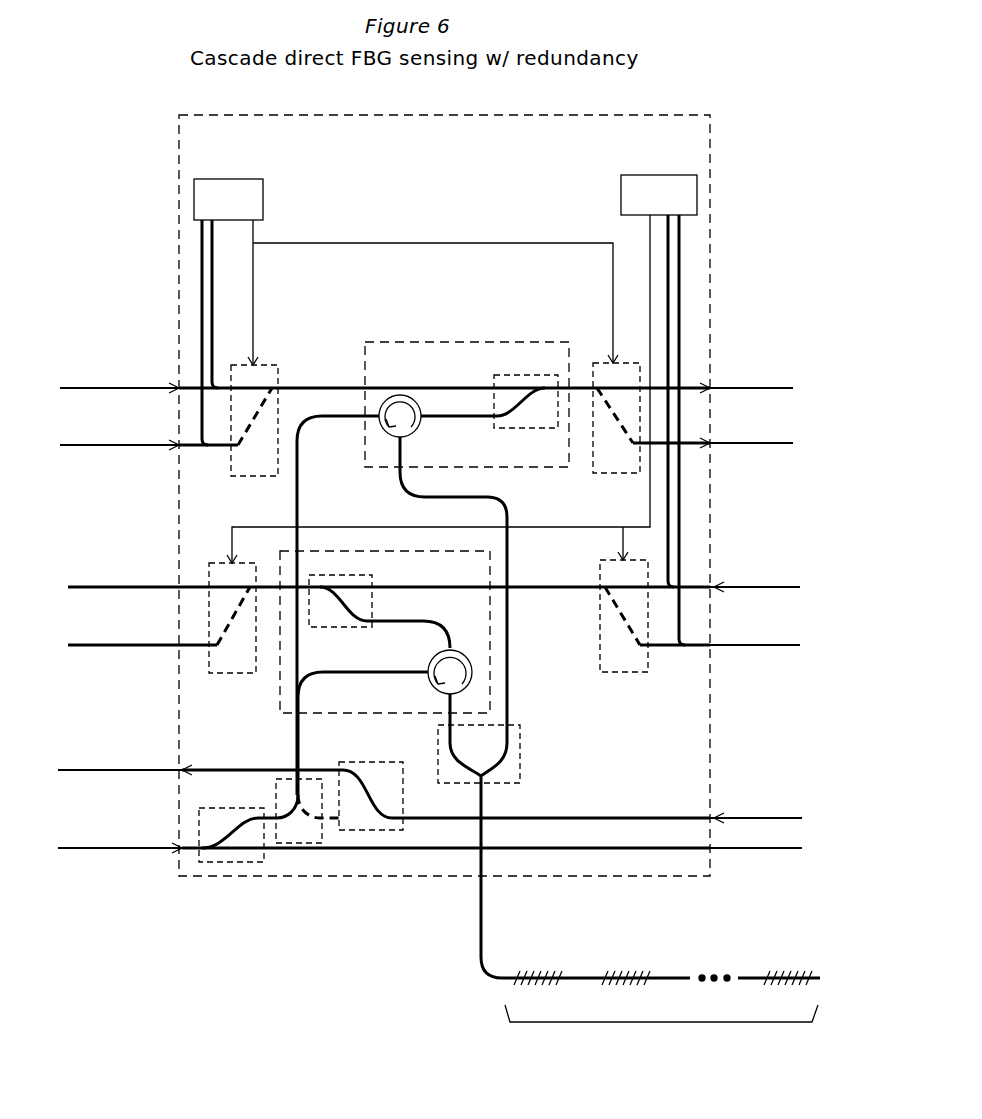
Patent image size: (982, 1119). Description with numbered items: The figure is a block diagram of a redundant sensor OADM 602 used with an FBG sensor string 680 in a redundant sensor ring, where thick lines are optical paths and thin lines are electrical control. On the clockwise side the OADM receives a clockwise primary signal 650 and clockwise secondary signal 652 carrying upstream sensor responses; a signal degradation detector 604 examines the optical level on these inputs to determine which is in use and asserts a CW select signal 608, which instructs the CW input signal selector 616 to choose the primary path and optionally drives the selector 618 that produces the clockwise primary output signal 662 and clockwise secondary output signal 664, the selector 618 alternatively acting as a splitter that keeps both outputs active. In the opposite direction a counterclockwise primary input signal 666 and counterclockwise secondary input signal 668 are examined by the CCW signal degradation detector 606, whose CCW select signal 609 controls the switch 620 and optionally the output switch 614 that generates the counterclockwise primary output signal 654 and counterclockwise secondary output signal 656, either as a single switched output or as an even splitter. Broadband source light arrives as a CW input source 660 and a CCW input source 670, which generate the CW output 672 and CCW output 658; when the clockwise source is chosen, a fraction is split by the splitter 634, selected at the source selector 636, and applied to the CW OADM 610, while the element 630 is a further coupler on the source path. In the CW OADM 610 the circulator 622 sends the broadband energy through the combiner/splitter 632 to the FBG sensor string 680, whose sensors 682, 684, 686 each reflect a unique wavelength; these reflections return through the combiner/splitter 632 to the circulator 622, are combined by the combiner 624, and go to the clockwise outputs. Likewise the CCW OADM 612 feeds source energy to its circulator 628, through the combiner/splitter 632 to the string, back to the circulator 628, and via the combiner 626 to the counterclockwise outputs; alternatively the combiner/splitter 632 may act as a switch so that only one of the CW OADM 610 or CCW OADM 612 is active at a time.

The redundant sensor OADM 602 is at (426, 482).
The signal degradation detector 604 is at (289, 286).
The CCW signal degradation detector 606 is at (587, 385).
The CW select signal 608 is at (433, 292).
The CCW select signal 609 is at (438, 389).
The CW OADM 610 is at (467, 390).
The CCW OADM 612 is at (363, 640).
The output switch 614 is at (225, 632).
The CW input signal selector 616 is at (253, 433).
The selector 618 is at (647, 434).
The switch 620 is at (651, 631).
The circulator 622 is at (402, 595).
The combiner 624 is at (489, 388).
The combiner 626 is at (379, 615).
The circulator 628 is at (385, 722).
The CCW source coupler 630 is at (524, 782).
The combiner/splitter 632 is at (564, 851).
The splitter 634 is at (231, 821).
The source selector 636 is at (299, 812).
The clockwise primary signal 650 is at (383, 355).
The clockwise secondary signal 652 is at (145, 440).
The counterclockwise primary output signal 654 is at (379, 556).
The counterclockwise secondary output signal 656 is at (132, 637).
The CCW output 658 is at (194, 749).
The CW input source 660 is at (384, 846).
The clockwise primary output signal 662 is at (759, 355).
The clockwise secondary output signal 664 is at (759, 437).
The counterclockwise primary input signal 666 is at (764, 553).
The counterclockwise secondary input signal 668 is at (764, 634).
The CCW input source 670 is at (769, 791).
The CW output 672 is at (767, 871).
The FBG sensor string 680 is at (662, 995).
The sensor 682 is at (539, 980).
The sensor 684 is at (627, 980).
The sensor 686 is at (790, 980).